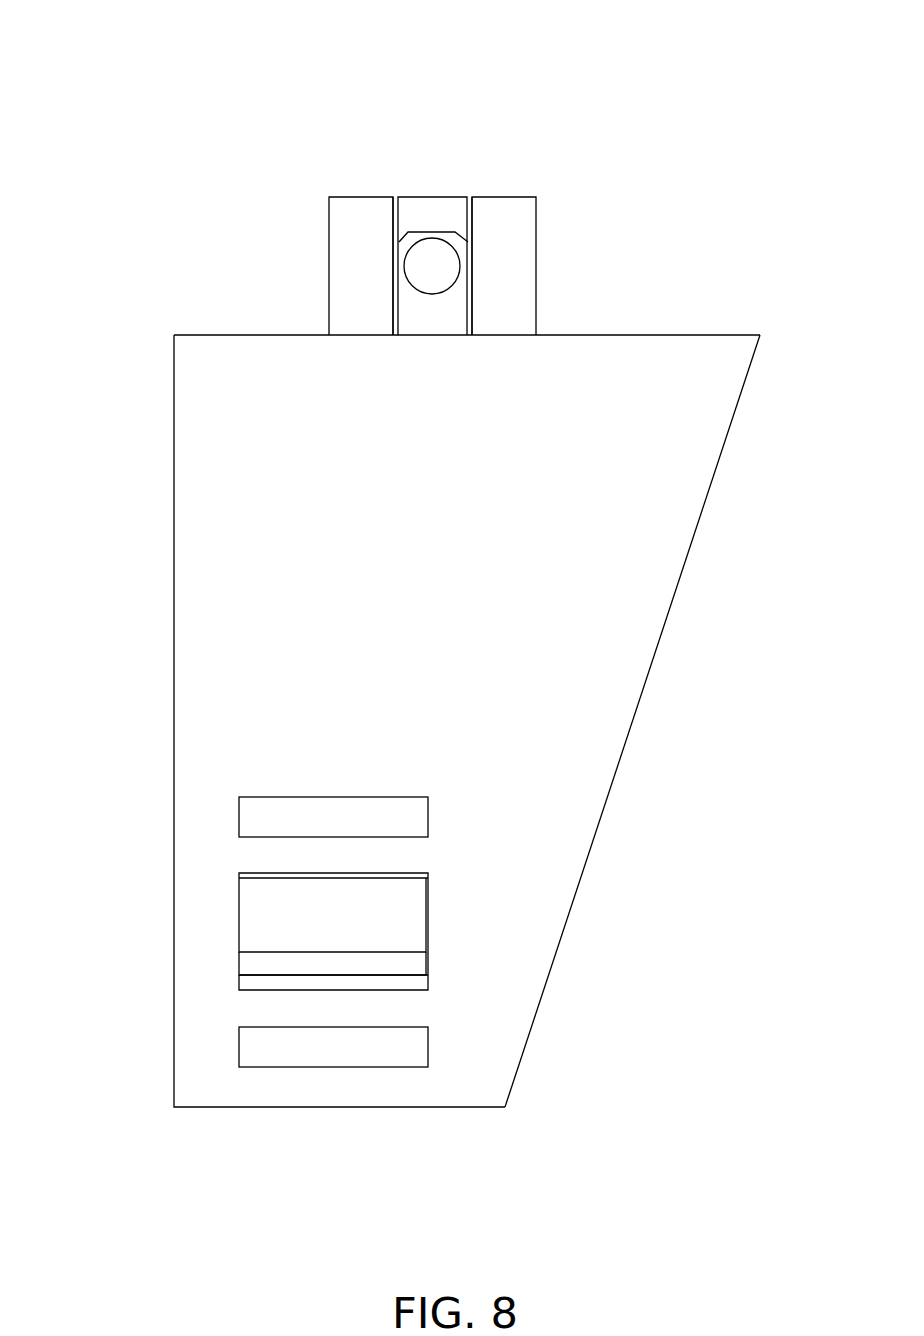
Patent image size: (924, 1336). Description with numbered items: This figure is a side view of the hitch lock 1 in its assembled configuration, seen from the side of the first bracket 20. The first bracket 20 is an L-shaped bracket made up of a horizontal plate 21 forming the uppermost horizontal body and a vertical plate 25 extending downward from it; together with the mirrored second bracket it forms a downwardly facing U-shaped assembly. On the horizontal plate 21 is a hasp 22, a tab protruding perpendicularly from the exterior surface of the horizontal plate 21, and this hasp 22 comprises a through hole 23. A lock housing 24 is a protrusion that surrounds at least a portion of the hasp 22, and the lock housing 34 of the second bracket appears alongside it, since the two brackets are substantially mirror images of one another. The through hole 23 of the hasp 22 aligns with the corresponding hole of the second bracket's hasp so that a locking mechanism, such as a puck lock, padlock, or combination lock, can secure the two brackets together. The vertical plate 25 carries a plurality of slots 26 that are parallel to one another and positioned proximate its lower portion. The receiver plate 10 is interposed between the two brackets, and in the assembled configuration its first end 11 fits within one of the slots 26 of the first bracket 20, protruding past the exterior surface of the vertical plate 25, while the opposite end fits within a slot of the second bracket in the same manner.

The hitch lock 1 is at (742, 48).
The receiver plate 10 is at (270, 920).
The first end 11 is at (260, 958).
The first bracket 20 is at (197, 624).
The horizontal plate 21 is at (690, 334).
The hasp 22 is at (440, 310).
The through hole 23 is at (428, 250).
The lock housing 24 is at (347, 306).
The vertical plate 25 is at (213, 740).
The slots 26 is at (412, 817).
The lock housing 34 is at (414, 208).